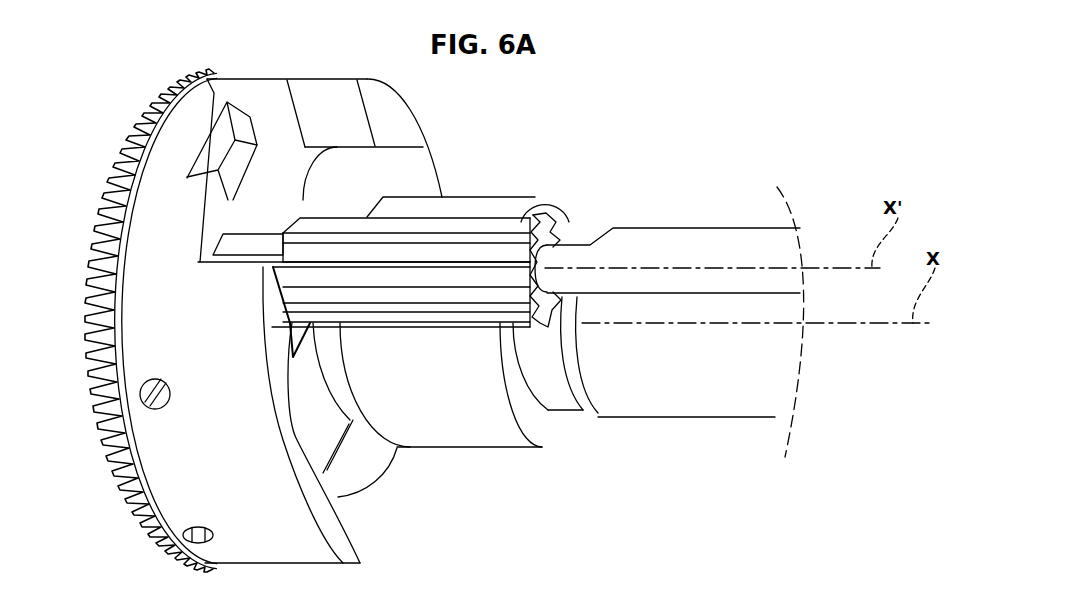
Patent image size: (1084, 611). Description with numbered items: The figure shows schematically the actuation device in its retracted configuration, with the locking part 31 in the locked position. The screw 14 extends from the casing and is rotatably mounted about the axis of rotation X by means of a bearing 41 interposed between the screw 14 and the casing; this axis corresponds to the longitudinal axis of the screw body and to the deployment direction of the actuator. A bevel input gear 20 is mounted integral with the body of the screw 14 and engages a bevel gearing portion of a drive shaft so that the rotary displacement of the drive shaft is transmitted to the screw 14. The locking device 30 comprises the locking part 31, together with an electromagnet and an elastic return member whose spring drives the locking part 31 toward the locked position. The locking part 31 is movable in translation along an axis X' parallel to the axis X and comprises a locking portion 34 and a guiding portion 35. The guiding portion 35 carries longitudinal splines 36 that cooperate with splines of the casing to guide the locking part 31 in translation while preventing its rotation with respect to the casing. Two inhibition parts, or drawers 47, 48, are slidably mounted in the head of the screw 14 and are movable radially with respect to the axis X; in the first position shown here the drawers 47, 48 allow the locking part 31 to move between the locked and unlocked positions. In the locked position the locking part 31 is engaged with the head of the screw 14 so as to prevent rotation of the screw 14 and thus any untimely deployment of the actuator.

The screw 14 is at (693, 390).
The bevel input gear 20 is at (102, 410).
The locking device 30 is at (565, 216).
The locking part 31 is at (697, 258).
The locking portion 34 is at (256, 242).
The guiding portion 35 is at (460, 232).
The longitudinal splines 36 is at (498, 255).
The bearing 41 is at (463, 420).
The inhibition part (drawer) 47 is at (367, 473).
The inhibition part (drawer) 48 is at (280, 180).